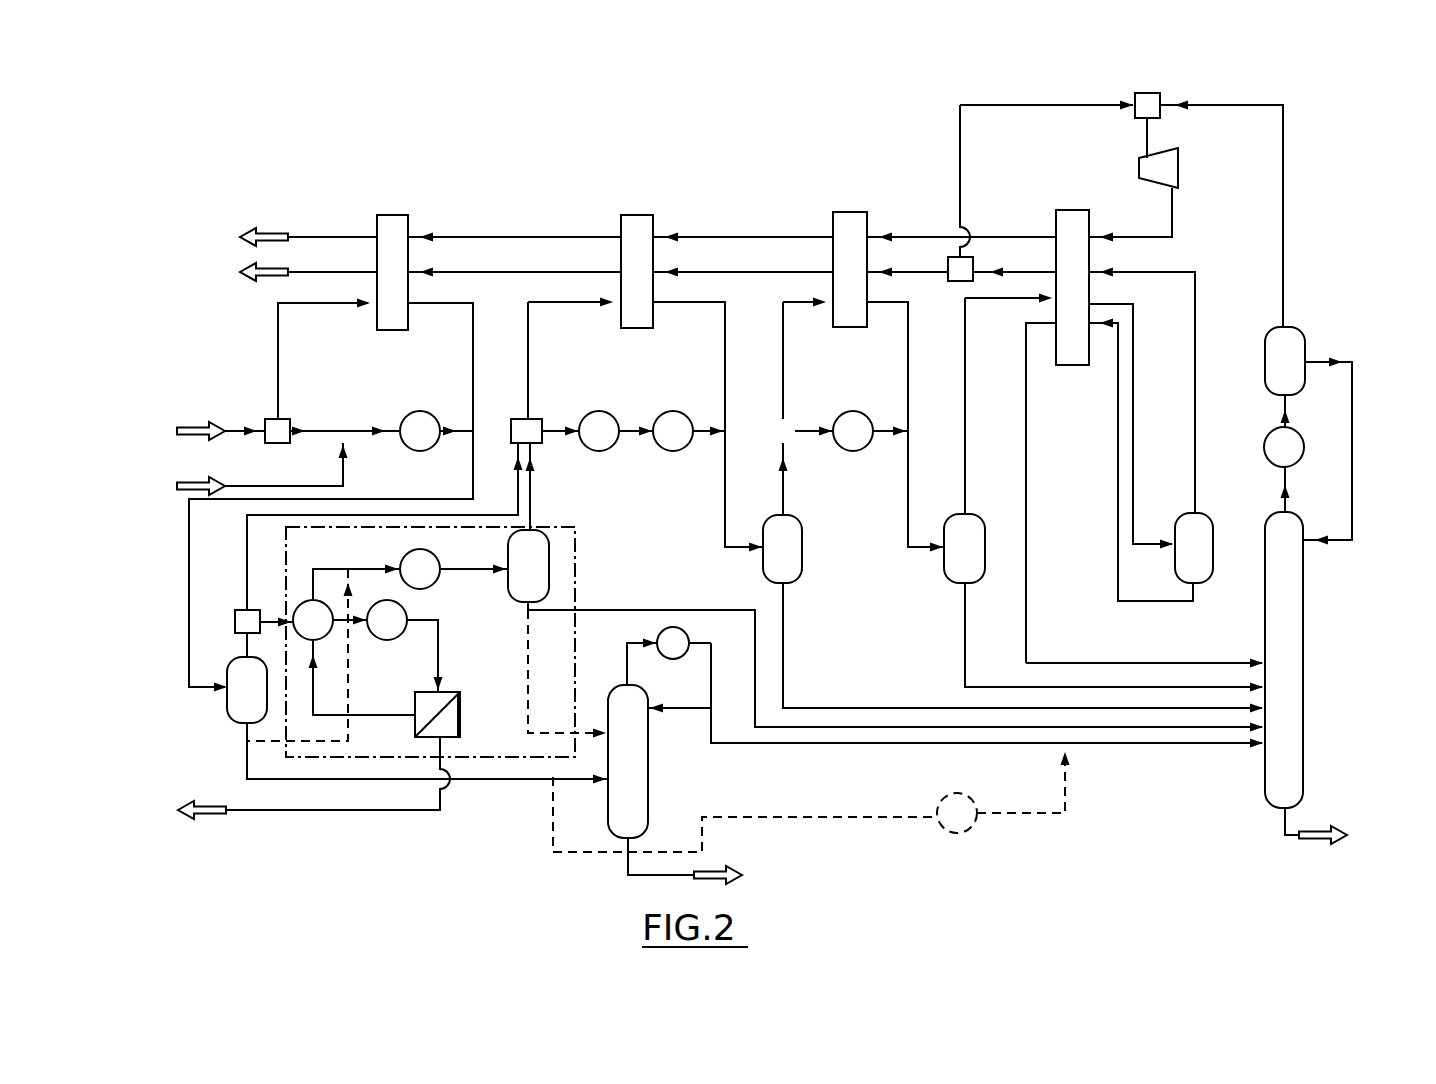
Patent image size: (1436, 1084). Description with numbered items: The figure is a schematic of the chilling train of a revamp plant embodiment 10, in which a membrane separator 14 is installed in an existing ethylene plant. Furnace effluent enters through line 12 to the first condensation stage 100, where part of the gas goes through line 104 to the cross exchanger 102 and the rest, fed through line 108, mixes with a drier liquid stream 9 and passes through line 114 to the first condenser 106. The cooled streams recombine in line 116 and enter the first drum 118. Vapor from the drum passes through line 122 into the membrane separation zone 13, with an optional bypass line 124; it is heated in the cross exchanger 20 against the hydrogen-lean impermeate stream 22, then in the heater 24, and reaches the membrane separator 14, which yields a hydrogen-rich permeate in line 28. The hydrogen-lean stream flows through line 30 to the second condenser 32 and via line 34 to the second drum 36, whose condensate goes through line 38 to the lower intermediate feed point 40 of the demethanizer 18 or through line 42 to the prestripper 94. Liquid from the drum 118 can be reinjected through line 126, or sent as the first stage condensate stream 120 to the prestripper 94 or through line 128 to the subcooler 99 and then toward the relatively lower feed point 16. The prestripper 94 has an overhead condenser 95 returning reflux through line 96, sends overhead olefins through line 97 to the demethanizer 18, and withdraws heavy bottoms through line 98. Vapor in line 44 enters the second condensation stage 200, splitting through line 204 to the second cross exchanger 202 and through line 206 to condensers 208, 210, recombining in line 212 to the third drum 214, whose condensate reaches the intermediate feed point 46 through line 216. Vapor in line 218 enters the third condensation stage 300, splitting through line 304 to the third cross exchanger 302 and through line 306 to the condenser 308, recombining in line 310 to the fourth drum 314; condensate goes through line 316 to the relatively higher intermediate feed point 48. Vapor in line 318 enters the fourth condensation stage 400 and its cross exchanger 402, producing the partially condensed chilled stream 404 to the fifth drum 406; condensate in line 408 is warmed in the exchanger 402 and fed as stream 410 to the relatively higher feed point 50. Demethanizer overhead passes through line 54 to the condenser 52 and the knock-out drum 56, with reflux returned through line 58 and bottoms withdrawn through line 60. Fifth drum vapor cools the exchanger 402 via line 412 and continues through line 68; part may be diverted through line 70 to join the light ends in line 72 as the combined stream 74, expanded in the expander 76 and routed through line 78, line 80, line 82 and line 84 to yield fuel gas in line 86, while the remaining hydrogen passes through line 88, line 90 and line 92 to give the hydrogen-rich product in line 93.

The revamp plant embodiment 10 is at (241, 836).
The line 12 is at (190, 430).
The drier liquid stream 9 is at (190, 485).
The line 108 is at (312, 437).
The line 104 is at (278, 356).
The line 114 is at (377, 427).
The first condenser 106 is at (423, 410).
The line 116 is at (372, 499).
The bypass line 124 is at (247, 548).
The line 122 is at (262, 615).
The first vapor-liquid separator drum 118 is at (228, 705).
The first stage condensate stream 120 is at (455, 782).
The line 126 is at (340, 742).
The line 28 is at (343, 812).
The membrane separation zone 13 is at (575, 565).
The cross exchanger 20 is at (312, 599).
The line 30 is at (322, 568).
The second condenser 32 is at (432, 558).
The line 34 is at (458, 572).
The heater 24 is at (368, 641).
The hydrogen-lean impermeate stream 22 is at (365, 717).
The membrane separator 14 is at (462, 706).
The second vapor-liquid separator drum 36 is at (555, 556).
The line 44 is at (530, 490).
The line 42 is at (520, 722).
The line 38 is at (668, 610).
The line 204 is at (530, 335).
The line 206 is at (548, 428).
The condenser 208 is at (601, 451).
The condenser 210 is at (673, 451).
The second cross exchanger cooler 202 is at (633, 330).
The second condensation stage 200 is at (614, 207).
The line 84 is at (510, 236).
The line 92 is at (497, 276).
The line 82 is at (770, 236).
The line 90 is at (740, 276).
The line 212 is at (724, 515).
The third condensation stage 300 is at (837, 207).
The third cross exchanger 302 is at (862, 330).
The line 304 is at (777, 387).
The line 306 is at (805, 428).
The condenser 308 is at (850, 451).
The line 310 is at (907, 532).
The line 218 is at (788, 497).
The third vapor-liquid separator drum 214 is at (798, 584).
The line 216 is at (786, 665).
The fourth vapor-liquid separator drum 314 is at (943, 578).
The line 316 is at (958, 655).
The line 318 is at (965, 440).
The line 88 is at (900, 264).
The line 80 is at (987, 228).
The line 68 is at (997, 272).
The line 70 is at (960, 130).
The combined stream 74 is at (1150, 128).
The expander 76 is at (1180, 168).
The line 78 is at (1172, 235).
The line 72 is at (1284, 200).
The fourth condensation stage 400 is at (1066, 181).
The cross exchanger 402 is at (1072, 366).
The line 412 is at (1193, 440).
The partially condensed chilled stream 404 is at (1133, 510).
The fifth vapor-liquid separator drum 406 is at (1170, 530).
The partially heated fifth condensate stream 410 is at (1026, 565).
The line 408 is at (1150, 603).
The condensate knock-out drum 56 is at (1265, 345).
The line 58 is at (1352, 372).
The condenser 52 is at (1265, 445).
The line 54 is at (1283, 500).
The demethanizer 18 is at (1303, 596).
The line 60 is at (1285, 836).
The relatively higher intermediate feed point 48 is at (1262, 686).
The relatively higher feed point 50 is at (1266, 662).
The intermediate feed point 46 is at (1262, 708).
The lower intermediate feed point 40 is at (1262, 724).
The relatively lower feed point 16 is at (1262, 742).
The demethanizer feed prestripper column 94 is at (650, 790).
The overhead condenser 95 is at (657, 636).
The line 96 is at (670, 710).
The line 97 is at (830, 745).
The line 98 is at (628, 876).
The line 128 is at (850, 818).
The subcooler 99 is at (960, 834).
The line 86 is at (322, 236).
The line 93 is at (310, 276).
The first condensation stage 100 is at (373, 208).
The cross exchanger 102 is at (395, 332).